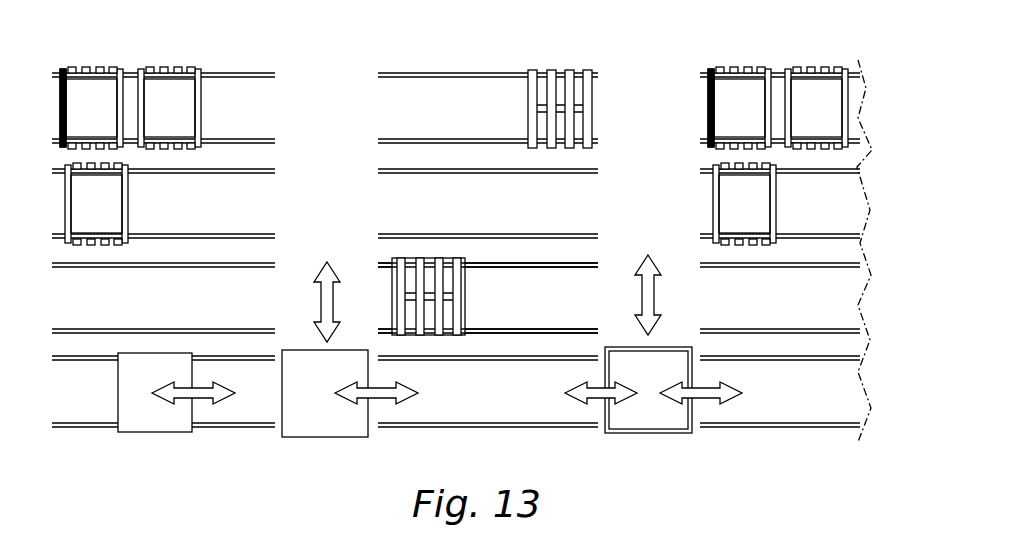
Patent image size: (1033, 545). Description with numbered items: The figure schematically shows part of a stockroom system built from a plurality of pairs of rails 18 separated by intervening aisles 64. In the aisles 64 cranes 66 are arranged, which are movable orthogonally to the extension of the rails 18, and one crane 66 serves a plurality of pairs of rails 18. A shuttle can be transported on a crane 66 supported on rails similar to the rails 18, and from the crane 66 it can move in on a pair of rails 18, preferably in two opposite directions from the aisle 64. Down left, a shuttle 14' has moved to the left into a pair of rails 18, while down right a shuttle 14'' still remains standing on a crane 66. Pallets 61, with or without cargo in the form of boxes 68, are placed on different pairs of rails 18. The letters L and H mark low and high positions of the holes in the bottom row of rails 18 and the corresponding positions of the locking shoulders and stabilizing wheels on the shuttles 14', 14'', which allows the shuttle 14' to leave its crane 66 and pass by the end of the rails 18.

The rails 18 is at (390, 140).
The pallets 61 is at (86, 72).
The boxes 68 is at (180, 85).
The aisles 64 is at (489, 265).
The shuttle 14' is at (164, 422).
The shuttle 14'' is at (653, 421).
The crane 66 is at (296, 427).